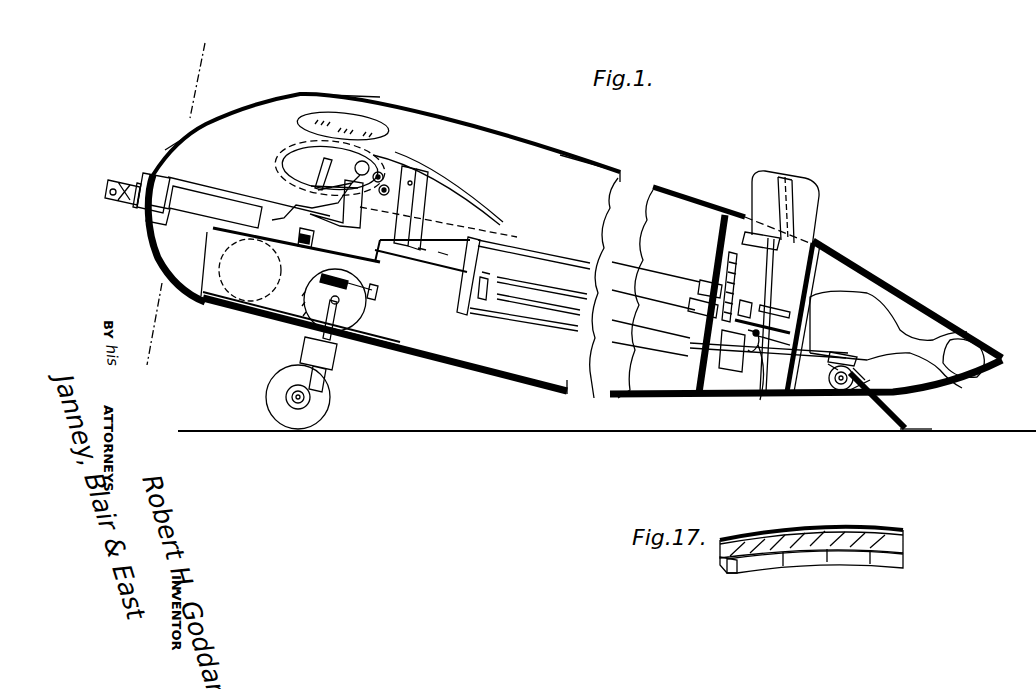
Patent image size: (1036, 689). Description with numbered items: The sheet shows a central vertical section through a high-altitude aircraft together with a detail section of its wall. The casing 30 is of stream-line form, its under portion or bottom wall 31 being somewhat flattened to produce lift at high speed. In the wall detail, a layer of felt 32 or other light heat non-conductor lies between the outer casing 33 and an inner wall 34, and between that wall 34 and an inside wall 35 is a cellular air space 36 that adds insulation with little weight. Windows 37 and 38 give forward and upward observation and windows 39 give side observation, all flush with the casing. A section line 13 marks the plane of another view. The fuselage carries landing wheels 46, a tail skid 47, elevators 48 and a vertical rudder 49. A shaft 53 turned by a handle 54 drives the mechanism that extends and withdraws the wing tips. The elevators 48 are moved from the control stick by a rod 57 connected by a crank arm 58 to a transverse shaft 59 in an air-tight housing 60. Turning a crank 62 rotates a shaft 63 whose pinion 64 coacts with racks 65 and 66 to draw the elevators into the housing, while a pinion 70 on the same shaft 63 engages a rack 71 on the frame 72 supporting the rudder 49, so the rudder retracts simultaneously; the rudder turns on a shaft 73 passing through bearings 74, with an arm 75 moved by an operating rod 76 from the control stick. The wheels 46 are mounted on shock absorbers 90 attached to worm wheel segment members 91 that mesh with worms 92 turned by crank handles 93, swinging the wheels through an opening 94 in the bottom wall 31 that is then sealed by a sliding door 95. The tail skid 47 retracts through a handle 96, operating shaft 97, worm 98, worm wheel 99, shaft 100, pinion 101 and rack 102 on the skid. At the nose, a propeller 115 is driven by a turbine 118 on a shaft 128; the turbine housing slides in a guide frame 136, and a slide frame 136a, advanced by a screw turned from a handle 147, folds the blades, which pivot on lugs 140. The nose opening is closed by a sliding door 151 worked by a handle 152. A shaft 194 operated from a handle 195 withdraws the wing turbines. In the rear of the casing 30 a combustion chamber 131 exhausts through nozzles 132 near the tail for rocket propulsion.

In FIG. 1, the section line 13- 13 is at (201, 60).
In FIG. 1, the casing 30 is at (598, 166).
In FIG. 17, the casing 30 is at (883, 520).
In FIG. 1, the under portion 31 is at (432, 360).
In FIG. 17, the layer of felt 32 is at (820, 528).
In FIG. 17, the outer casing 33 is at (763, 533).
In FIG. 17, the inner wall 34 is at (722, 565).
In FIG. 17, the inside wall 35 is at (760, 578).
In FIG. 17, the air space 36 is at (805, 565).
In FIG. 1, the window 37 is at (190, 128).
In FIG. 1, the window 38 is at (340, 96).
In FIG. 1, the windows 39 is at (388, 138).
In FIG. 1, the landing wheels 46 is at (331, 402).
In FIG. 1, the tail skid 47 is at (880, 414).
In FIG. 1, the elevators 48 is at (770, 396).
In FIG. 1, the vertical rudder 49 is at (818, 212).
In FIG. 1, the shaft 53 is at (392, 162).
In FIG. 1, the handle 54 is at (452, 187).
In FIG. 1, the rod 57 is at (605, 350).
In FIG. 1, the crank arm 58 is at (763, 365).
In FIG. 1, the shaft 59 is at (768, 328).
In FIG. 1, the air-tight housing 60 is at (808, 262).
In FIG. 1, the crank 62 is at (500, 268).
In FIG. 1, the shaft 63 is at (622, 305).
In FIG. 1, the pinion 64 is at (760, 258).
In FIG. 1, the rack 65 is at (748, 298).
In FIG. 1, the rack 66 is at (732, 362).
In FIG. 1, the pinion 70 is at (700, 300).
In FIG. 1, the rack 71 is at (722, 268).
In FIG. 1, the frame 72 is at (720, 240).
In FIG. 1, the shaft 73 is at (778, 300).
In FIG. 1, the bearings 74 is at (780, 174).
In FIG. 1, the arm 75 is at (778, 318).
In FIG. 1, the operating rod 76 is at (590, 273).
In FIG. 1, the shock absorbers 90 is at (334, 354).
In FIG. 1, the worm wheel segment members 91 is at (320, 290).
In FIG. 1, the worms 92 is at (340, 274).
In FIG. 1, the crank handles 93 is at (378, 290).
In FIG. 1, the opening 94 is at (262, 315).
In FIG. 1, the sliding door 95 is at (390, 342).
In FIG. 1, the crank 96 is at (488, 300).
In FIG. 1, the operating shaft 97 is at (612, 330).
In FIG. 1, the worm 98 is at (850, 352).
In FIG. 1, the worm wheel 99 is at (828, 372).
In FIG. 1, the shaft 100 is at (835, 386).
In FIG. 1, the pinion 101 is at (830, 382).
In FIG. 1, the rack 102 is at (865, 379).
In FIG. 1, the propeller 115 is at (136, 205).
In FIG. 1, the turbine 118 is at (115, 180).
In FIG. 1, the shaft 128 is at (378, 248).
In FIG. 1, the combustion chamber 131 is at (865, 303).
In FIG. 1, the nozzles 132 is at (960, 340).
In FIG. 1, the guide frame 136 is at (200, 185).
In FIG. 1, the slide frame 136a is at (150, 228).
In FIG. 1, the lugs 140 is at (443, 252).
In FIG. 1, the crank 147 is at (422, 245).
In FIG. 1, the sliding door 151 is at (165, 268).
In FIG. 1, the handle 152 is at (195, 275).
In FIG. 1, the shaft 194 is at (382, 198).
In FIG. 1, the crank 195 is at (455, 207).